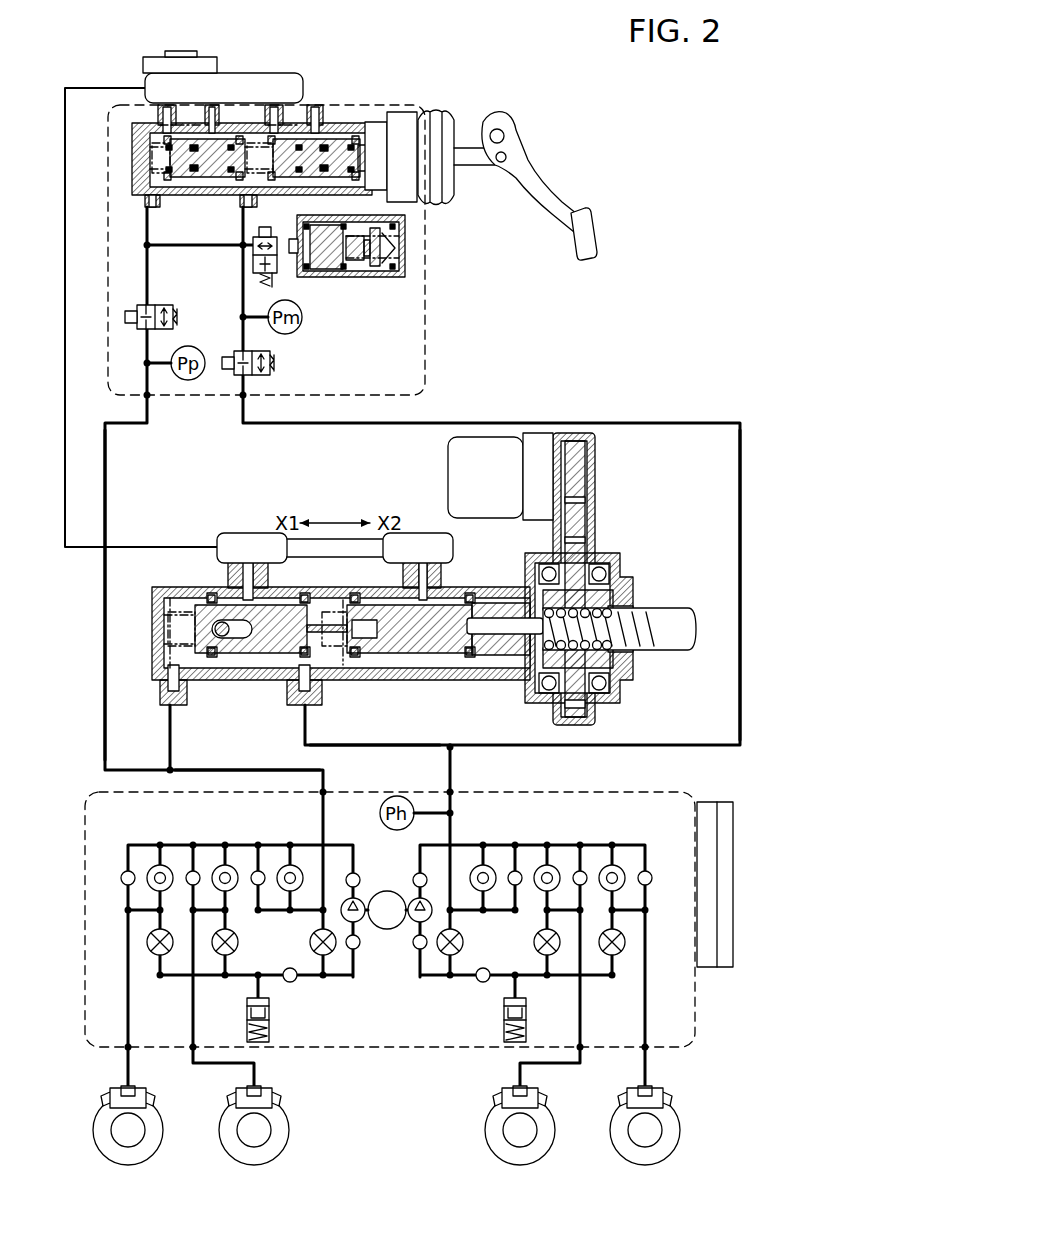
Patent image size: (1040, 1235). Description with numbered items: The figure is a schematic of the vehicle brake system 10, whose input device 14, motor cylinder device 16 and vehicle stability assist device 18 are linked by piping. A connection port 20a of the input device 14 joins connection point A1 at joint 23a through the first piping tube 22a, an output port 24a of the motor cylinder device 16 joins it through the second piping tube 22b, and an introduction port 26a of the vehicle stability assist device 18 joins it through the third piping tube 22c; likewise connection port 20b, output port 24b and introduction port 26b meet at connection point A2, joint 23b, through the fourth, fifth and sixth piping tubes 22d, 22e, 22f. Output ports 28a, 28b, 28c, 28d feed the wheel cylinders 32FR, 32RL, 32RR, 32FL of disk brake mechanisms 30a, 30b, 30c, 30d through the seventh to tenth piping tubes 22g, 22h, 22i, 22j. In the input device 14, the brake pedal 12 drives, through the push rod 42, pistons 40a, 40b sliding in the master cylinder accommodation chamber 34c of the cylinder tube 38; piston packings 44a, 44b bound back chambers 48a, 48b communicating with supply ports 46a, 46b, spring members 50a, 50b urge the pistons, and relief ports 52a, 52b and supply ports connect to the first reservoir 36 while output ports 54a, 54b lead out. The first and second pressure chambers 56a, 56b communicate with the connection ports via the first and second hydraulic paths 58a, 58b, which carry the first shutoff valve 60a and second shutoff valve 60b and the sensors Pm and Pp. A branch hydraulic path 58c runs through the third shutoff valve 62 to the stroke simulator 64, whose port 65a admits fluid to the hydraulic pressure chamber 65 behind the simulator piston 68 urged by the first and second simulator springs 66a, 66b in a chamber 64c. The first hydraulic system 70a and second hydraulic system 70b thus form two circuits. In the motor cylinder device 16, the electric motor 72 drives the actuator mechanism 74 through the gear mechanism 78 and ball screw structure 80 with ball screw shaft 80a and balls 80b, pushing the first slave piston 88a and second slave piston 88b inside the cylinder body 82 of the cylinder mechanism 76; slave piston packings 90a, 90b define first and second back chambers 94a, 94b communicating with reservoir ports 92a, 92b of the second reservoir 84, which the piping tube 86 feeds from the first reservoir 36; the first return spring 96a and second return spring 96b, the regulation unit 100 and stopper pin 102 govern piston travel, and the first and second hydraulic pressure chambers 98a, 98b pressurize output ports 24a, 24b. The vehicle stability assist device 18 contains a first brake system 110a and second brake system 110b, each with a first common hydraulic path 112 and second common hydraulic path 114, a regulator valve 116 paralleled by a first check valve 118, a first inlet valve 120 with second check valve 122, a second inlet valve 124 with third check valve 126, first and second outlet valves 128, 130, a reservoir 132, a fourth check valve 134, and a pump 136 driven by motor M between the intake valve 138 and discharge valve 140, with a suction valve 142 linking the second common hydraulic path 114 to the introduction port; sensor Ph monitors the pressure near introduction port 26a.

The vehicle brake system 10 is at (530, 96).
The brake pedal 12 is at (598, 234).
The input device 14 is at (428, 308).
The motor cylinder device 16 is at (607, 492).
The vehicle stability assist device 18 is at (600, 792).
The connection port 20a is at (240, 408).
The connection port 20b is at (150, 412).
The first piping tube 22a is at (741, 498).
The second piping tube 22b is at (392, 718).
The third piping tube 22c is at (452, 770).
The fourth piping tube 22d is at (103, 580).
The fifth piping tube 22e is at (168, 724).
The sixth piping tube 22f is at (268, 770).
The seventh piping tube 22g is at (647, 1080).
The eighth piping tube 22h is at (520, 1065).
The ninth piping tube 22i is at (256, 1064).
The tenth piping tube 22j is at (127, 1078).
The joint 23a is at (480, 736).
The joint 23b is at (209, 760).
The output port 24a is at (308, 692).
The output port 24b is at (173, 692).
The introduction port 26a is at (455, 790).
The introduction port 26b is at (326, 790).
The first output port 28a is at (648, 1050).
The second output port 28b is at (583, 1050).
The third output port 28c is at (192, 1050).
The fourth output port 28d is at (126, 1049).
The disk brake mechanism 30a is at (679, 1150).
The disk brake mechanism 30b is at (554, 1150).
The disk brake mechanism 30c is at (288, 1150).
The disk brake mechanism 30d is at (162, 1150).
The wheel cylinder 32FL is at (150, 1100).
The wheel cylinder 32RR is at (276, 1100).
The wheel cylinder 32RL is at (542, 1100).
The wheel cylinder 32FR is at (667, 1100).
The master cylinder accommodation chamber 34c is at (150, 180).
The first reservoir 36 is at (230, 75).
The cylinder tube 38 is at (357, 124).
The piston 40a is at (322, 138).
The piston 40b is at (200, 150).
The push rod 42 is at (470, 148).
The piston packing 44a is at (232, 187).
The piston packing 44b is at (172, 187).
The supply port 46a is at (292, 150).
The supply port 46b is at (225, 150).
The back chamber 48a is at (330, 183).
The back chamber 48b is at (198, 187).
The spring member 50a is at (254, 100).
The spring member 50b is at (143, 117).
The relief port 52a is at (262, 137).
The relief port 52b is at (162, 137).
The output port 54a is at (252, 206).
The output port 54b is at (142, 203).
The first pressure chamber 56a is at (257, 158).
The second pressure chamber 56b is at (157, 158).
The first hydraulic path 58a is at (241, 318).
The second hydraulic path 58b is at (145, 278).
The branch hydraulic path 58c is at (196, 248).
The first shutoff valve 60a is at (272, 372).
The second shutoff valve 60b is at (158, 304).
The third shutoff valve 62 is at (246, 278).
The stroke simulator 64 is at (410, 238).
The hydraulic chamber 64c is at (402, 262).
The hydraulic pressure chamber 65 is at (316, 272).
The port 65a is at (292, 258).
The first simulator spring 66a is at (380, 270).
The second simulator spring 66b is at (356, 272).
The simulator piston 68 is at (342, 272).
The first hydraulic system 70a is at (512, 408).
The second hydraulic system 70b is at (95, 624).
The electric motor 72 is at (448, 468).
The actuator mechanism 74 is at (612, 558).
The cylinder mechanism 76 is at (390, 674).
The gear mechanism 78 is at (590, 518).
The ball screw structure 80 is at (690, 608).
The ball screw shaft 80a is at (632, 645).
The balls 80b is at (610, 600).
The cylinder body 82 is at (486, 604).
The second reservoir 84 is at (407, 534).
The piping tube 86 is at (63, 313).
The first slave piston 88a is at (452, 657).
The second slave piston 88b is at (252, 656).
The slave piston packing 90a is at (302, 658).
The slave piston packing 90b is at (212, 658).
The reservoir port 92a is at (430, 566).
The reservoir port 92b is at (248, 585).
The first back chamber 94a is at (414, 657).
The second back chamber 94b is at (241, 657).
The first return spring 96a is at (344, 668).
The second return spring 96b is at (172, 592).
The first hydraulic pressure chamber 98a is at (347, 658).
The second hydraulic pressure chamber 98b is at (178, 629).
The regulation unit 100 is at (323, 624).
The stopper pin 102 is at (220, 622).
The first brake system 110a is at (645, 842).
The second brake system 110b is at (124, 842).
The first common hydraulic path 112 is at (196, 860).
The second common hydraulic path 114 is at (210, 978).
The regulator valve 116 is at (291, 864).
The first check valve 118 is at (259, 870).
The first inlet valve 120 is at (160, 864).
The second check valve 122 is at (126, 870).
The second inlet valve 124 is at (225, 864).
The third check valve 126 is at (193, 870).
The first outlet valve 128 is at (160, 957).
The second outlet valve 130 is at (240, 942).
The reservoir 132 is at (270, 1025).
The fourth check valve 134 is at (291, 983).
The pump 136 is at (414, 944).
The intake valve 138 is at (417, 956).
The discharge valve 140 is at (414, 875).
The suction valve 142 is at (325, 957).